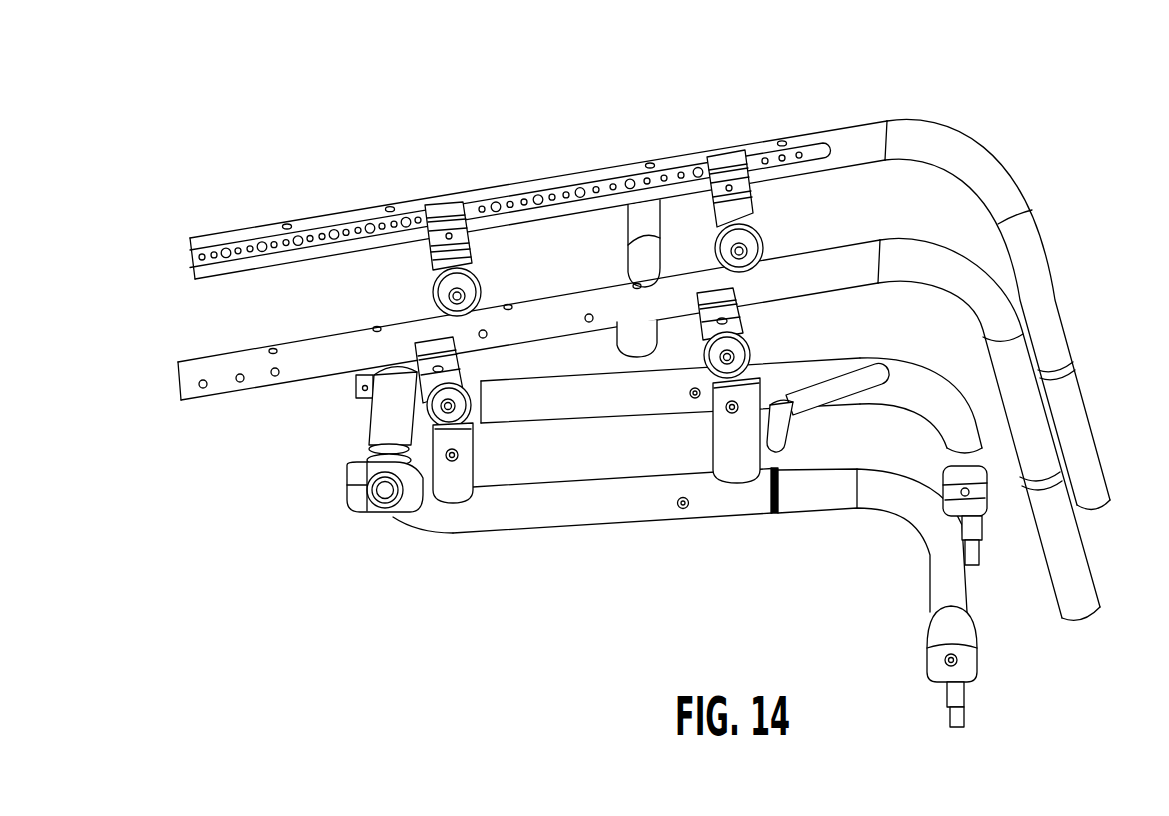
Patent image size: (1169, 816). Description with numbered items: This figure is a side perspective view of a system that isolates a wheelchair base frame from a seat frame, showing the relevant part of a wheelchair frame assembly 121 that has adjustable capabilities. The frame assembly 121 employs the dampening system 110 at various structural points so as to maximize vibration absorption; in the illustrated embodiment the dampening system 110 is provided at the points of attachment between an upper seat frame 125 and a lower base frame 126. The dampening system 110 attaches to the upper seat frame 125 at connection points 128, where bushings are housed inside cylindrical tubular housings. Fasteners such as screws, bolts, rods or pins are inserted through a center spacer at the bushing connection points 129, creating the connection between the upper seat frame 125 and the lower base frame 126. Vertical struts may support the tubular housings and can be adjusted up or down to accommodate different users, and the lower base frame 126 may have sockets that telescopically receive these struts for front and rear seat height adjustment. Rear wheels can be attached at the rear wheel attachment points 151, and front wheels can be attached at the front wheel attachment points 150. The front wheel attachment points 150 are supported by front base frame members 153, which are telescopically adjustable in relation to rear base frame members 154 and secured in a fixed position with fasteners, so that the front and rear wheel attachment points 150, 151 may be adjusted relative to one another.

The wheelchair frame assembly 121 is at (666, 390).
The upper seat frame 125 is at (953, 152).
The bushing connection points 129 is at (455, 292).
The connection points 128 is at (403, 270).
The lower base frame 126 is at (590, 505).
The dampening system 110 is at (495, 277).
The front wheel attachment points 150 is at (988, 583).
The rear wheel attachment points 151 is at (388, 523).
The front base frame members 153 is at (927, 520).
The rear base frame members 154 is at (757, 493).